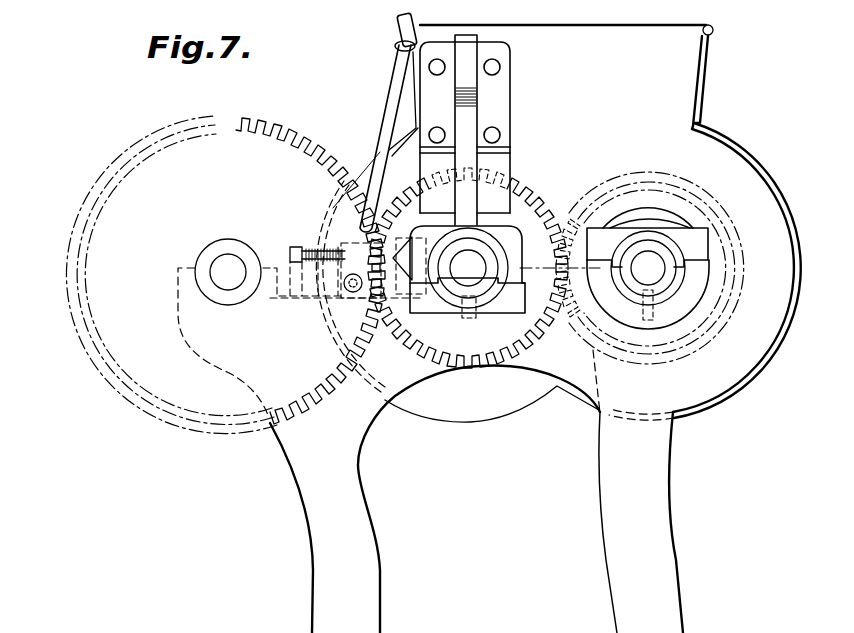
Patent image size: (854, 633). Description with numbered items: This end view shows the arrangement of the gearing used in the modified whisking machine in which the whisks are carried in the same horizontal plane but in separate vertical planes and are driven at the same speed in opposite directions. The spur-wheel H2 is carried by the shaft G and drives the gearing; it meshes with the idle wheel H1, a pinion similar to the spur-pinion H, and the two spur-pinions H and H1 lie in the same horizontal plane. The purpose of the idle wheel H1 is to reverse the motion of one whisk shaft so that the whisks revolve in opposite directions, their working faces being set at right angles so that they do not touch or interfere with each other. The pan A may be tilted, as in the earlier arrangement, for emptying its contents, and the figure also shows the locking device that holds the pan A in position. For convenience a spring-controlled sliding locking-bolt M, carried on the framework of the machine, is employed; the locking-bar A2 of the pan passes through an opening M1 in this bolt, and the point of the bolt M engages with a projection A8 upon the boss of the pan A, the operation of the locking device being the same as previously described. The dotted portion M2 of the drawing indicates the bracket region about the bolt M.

The pan A is at (585, 127).
The locking-bar A2 is at (385, 137).
The projection A8 is at (446, 267).
The shaft G is at (233, 265).
The spur-pinion H is at (620, 343).
The idle wheel H1 is at (482, 346).
The spur-wheel H2 is at (302, 387).
The locking-bolt M is at (340, 225).
The opening M1 is at (356, 254).
The bracket M2 is at (446, 246).